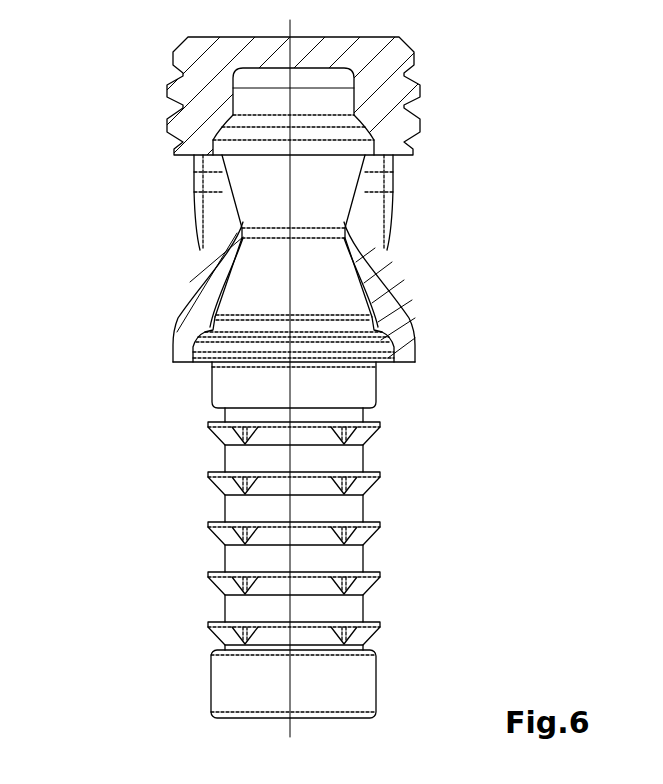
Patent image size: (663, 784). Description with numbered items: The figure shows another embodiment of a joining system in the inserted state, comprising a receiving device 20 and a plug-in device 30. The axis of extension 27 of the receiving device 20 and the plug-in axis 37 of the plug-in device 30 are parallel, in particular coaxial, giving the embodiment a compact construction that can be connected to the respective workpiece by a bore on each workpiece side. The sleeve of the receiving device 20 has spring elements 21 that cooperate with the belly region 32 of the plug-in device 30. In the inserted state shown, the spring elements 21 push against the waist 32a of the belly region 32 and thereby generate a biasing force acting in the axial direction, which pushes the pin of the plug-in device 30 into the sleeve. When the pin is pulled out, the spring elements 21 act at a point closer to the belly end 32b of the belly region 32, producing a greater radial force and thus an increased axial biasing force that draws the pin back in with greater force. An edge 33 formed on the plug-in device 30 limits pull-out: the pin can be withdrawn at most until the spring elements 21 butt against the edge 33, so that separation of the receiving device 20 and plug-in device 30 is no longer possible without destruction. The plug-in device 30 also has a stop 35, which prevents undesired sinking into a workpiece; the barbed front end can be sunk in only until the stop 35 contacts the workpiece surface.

The receiving device 20 is at (310, 92).
The spring elements 21 is at (354, 292).
The belly region 32 is at (294, 236).
The waist 32a is at (395, 215).
The belly end 32b is at (395, 194).
The edge 33 is at (221, 202).
The stop 35 is at (346, 367).
The plug-in device 30 is at (307, 563).
The plug-in axis 37 is at (215, 707).
The axis of extension 27 is at (288, 722).